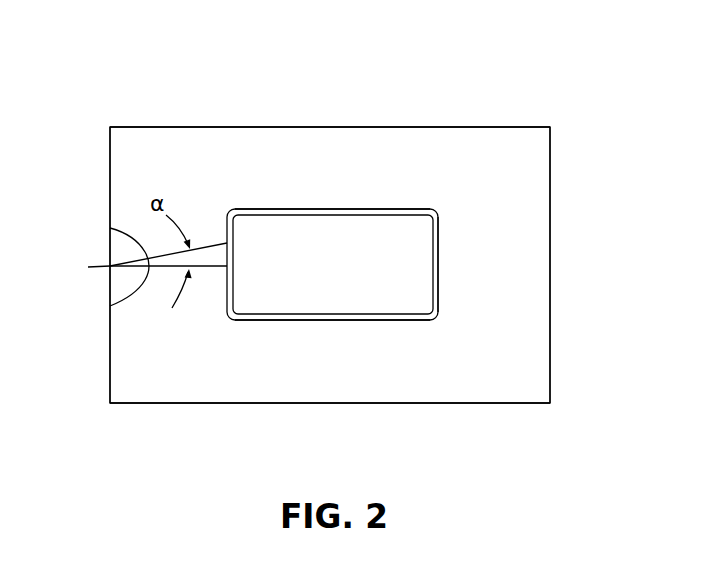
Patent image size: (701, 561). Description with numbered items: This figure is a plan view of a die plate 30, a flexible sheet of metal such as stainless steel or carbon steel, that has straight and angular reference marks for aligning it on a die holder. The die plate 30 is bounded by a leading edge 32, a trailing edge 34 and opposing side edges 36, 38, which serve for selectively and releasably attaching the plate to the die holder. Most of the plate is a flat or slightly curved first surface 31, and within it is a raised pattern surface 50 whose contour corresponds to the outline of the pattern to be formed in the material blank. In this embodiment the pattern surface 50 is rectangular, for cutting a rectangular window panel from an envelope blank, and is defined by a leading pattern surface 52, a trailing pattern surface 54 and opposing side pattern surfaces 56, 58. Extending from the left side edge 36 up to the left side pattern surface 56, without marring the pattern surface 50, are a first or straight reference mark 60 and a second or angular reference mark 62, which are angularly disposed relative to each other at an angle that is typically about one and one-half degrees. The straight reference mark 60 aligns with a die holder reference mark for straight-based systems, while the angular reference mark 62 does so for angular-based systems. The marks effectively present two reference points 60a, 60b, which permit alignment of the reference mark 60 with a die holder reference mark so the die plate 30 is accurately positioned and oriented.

The die plate 30 is at (482, 82).
The first surface 31 is at (278, 138).
The leading edge 32 is at (186, 127).
The trailing edge 34 is at (322, 404).
The side edge 36 is at (109, 143).
The side edge 38 is at (551, 156).
The pattern surface 50 is at (410, 202).
The leading pattern surface 52 is at (356, 209).
The trailing pattern surface 54 is at (385, 321).
The side pattern surface 56 is at (233, 245).
The side pattern surface 58 is at (438, 254).
The straight reference mark 60 is at (110, 306).
The reference point 60a is at (88, 267).
The reference point 60b is at (233, 268).
The angular reference mark 62 is at (110, 228).